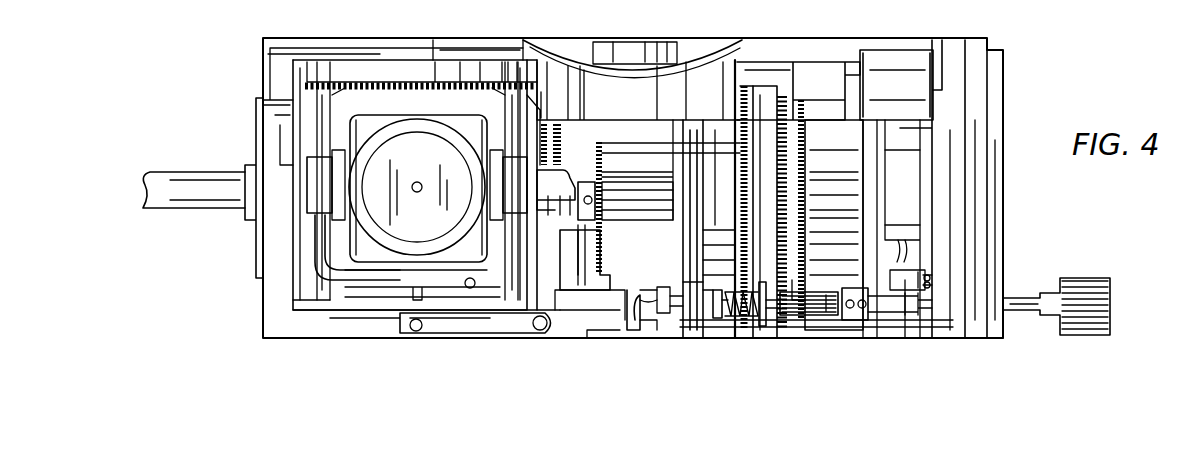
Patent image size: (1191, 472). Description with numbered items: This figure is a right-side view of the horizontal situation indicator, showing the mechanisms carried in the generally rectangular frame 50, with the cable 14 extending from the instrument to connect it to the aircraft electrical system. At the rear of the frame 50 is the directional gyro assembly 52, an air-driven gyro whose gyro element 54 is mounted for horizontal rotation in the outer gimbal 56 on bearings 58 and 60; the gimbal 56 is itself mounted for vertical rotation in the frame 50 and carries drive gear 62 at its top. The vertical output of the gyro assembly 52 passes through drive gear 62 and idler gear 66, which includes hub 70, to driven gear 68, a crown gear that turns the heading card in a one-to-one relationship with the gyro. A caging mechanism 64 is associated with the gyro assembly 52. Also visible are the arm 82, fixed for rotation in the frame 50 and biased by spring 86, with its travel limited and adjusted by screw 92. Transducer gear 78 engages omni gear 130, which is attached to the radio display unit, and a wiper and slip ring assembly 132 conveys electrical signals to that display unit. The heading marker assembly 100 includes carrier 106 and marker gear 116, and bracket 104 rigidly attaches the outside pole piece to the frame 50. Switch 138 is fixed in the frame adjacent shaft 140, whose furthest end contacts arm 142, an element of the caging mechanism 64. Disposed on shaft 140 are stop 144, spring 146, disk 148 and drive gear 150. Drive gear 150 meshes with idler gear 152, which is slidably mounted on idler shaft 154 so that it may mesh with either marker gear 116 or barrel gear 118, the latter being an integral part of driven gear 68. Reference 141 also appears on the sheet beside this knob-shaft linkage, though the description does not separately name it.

The cable 14 is at (178, 190).
The frame 50 is at (815, 58).
The directional gyro assembly 52 is at (343, 127).
The gyro element 54 is at (428, 156).
The outer gimbal 56 is at (318, 268).
The bearing 58 is at (515, 186).
The bearing 60 is at (320, 186).
The drive gear 62 is at (440, 75).
The caging mechanism 64 is at (438, 350).
The idler gear 66 is at (739, 86).
The driven gear 68 is at (765, 212).
The hub 70 is at (622, 48).
The transducer gear 78 is at (585, 268).
The arm 82 is at (571, 178).
The spring 86 is at (566, 145).
The screw 92 is at (540, 138).
The heading marker assembly 100 is at (834, 225).
The bracket 104 is at (822, 90).
The carrier 106 is at (880, 232).
The marker gear 116 is at (804, 186).
The barrel gear 118 is at (792, 222).
The omni gear 130 is at (605, 200).
The wiper and slip ring assembly 132 is at (560, 228).
The switch 138 is at (920, 275).
The shaft 140 is at (912, 315).
The pin 141 is at (646, 302).
The arm 142 is at (632, 322).
The stop 144 is at (718, 318).
The spring 146 is at (740, 316).
The disk 148 is at (767, 318).
The drive gear 150 is at (818, 318).
The idler gear 152 is at (800, 276).
The idler shaft 154 is at (648, 290).